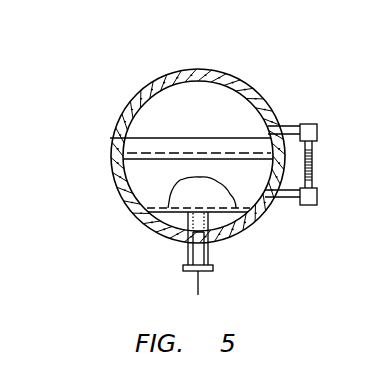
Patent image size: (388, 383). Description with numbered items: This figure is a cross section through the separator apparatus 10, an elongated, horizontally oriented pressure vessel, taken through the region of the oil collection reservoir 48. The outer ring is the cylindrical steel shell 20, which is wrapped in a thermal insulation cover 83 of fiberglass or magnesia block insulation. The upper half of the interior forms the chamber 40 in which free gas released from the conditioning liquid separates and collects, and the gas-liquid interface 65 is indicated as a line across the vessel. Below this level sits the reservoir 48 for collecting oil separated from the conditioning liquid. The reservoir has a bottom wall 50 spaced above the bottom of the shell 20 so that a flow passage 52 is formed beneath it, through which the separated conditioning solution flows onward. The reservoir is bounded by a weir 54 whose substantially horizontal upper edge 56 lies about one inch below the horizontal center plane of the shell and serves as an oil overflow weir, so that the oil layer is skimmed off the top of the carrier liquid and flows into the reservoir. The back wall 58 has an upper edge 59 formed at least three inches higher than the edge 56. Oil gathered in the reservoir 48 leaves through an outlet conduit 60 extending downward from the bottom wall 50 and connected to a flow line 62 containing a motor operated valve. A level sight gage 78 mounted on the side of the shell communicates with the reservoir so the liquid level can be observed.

The separator apparatus 10 is at (189, 64).
The shell 20 is at (264, 100).
The chamber 40 is at (212, 113).
The reservoir 48 is at (130, 206).
The bottom wall 50 is at (223, 215).
The flow passage 52 is at (169, 220).
The weir 54 is at (117, 195).
The upper edge 56 is at (133, 158).
The back wall 58 is at (110, 138).
The upper edge 59 is at (147, 137).
The outlet conduit 60 is at (210, 256).
The flow line 62 is at (200, 290).
The gas-liquid interface 65 is at (184, 152).
The level sight gage 78 is at (312, 164).
The thermal insulation cover 83 is at (217, 72).